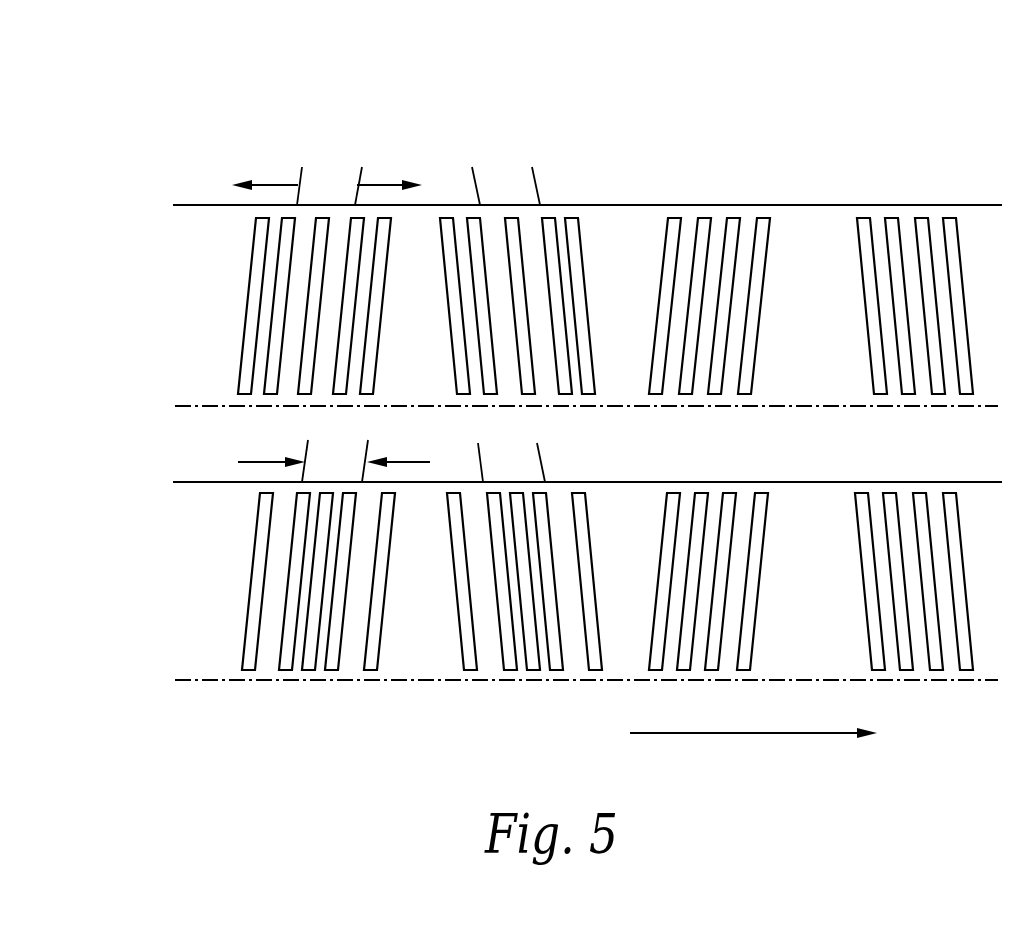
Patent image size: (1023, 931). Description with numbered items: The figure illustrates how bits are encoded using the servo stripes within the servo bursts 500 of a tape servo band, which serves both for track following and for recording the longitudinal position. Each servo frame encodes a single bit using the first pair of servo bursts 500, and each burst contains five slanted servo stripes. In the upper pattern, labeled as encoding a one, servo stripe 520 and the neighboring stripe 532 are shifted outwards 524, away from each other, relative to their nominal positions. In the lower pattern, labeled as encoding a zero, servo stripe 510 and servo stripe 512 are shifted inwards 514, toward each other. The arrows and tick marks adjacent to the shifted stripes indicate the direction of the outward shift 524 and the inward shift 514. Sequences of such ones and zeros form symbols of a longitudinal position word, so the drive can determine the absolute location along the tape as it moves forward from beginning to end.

The servo bursts 500 is at (136, 95).
The servo stripe 2 510 is at (280, 670).
The servo stripe 3 512 is at (332, 670).
The inward shift 514 is at (333, 457).
The servo stripe 2 520 is at (268, 394).
The outward shift 524 is at (328, 172).
The second servo stripe (one burst) 532 is at (342, 394).